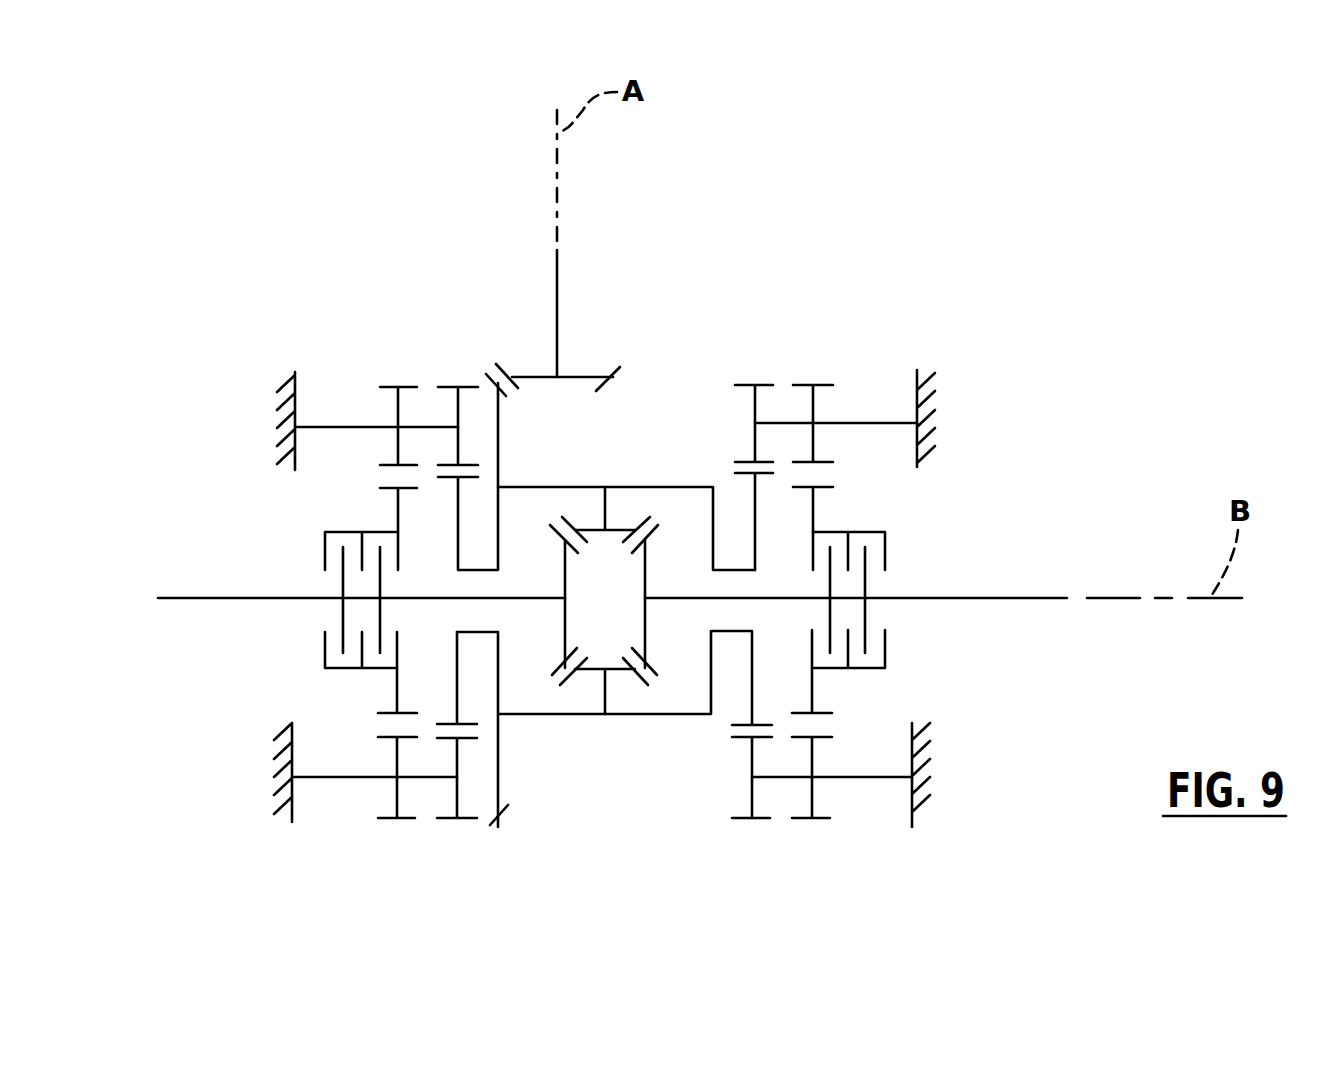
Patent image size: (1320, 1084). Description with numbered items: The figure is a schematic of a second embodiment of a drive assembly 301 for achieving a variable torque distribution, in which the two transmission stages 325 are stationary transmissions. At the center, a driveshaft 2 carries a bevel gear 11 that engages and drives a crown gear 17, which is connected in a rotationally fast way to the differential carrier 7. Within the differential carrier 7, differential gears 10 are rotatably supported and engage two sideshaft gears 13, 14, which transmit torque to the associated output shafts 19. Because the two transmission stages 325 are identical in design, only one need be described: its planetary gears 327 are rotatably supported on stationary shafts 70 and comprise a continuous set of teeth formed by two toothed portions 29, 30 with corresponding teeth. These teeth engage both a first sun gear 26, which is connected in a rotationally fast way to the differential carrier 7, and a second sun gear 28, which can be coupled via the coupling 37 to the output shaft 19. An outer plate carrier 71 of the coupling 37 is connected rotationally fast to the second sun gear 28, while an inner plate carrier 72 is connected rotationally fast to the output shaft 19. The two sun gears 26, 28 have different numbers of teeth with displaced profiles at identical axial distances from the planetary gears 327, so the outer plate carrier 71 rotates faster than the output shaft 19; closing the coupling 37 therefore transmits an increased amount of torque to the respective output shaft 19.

The driveshaft 2 is at (558, 292).
The differential carrier 7 is at (557, 487).
The differential gears 10 is at (617, 530).
The bevel gear 11 is at (618, 370).
The sideshaft gear 13 is at (565, 630).
The sideshaft gear 14 is at (645, 630).
The crown gear 17 is at (490, 825).
The output shaft 19 is at (205, 598).
The first sun gear 26 is at (467, 725).
The second sun gear 28 is at (383, 714).
The toothed portion 29 is at (448, 383).
The toothed portion 30 is at (388, 385).
The coupling 37 is at (266, 532).
The stationary shafts 70 is at (343, 782).
The outer plate carrier 71 is at (342, 672).
The inner plate carrier 72 is at (342, 617).
The drive assembly 301 is at (772, 187).
The transmission stages 325 is at (351, 370).
The planetary gears 327 is at (423, 787).